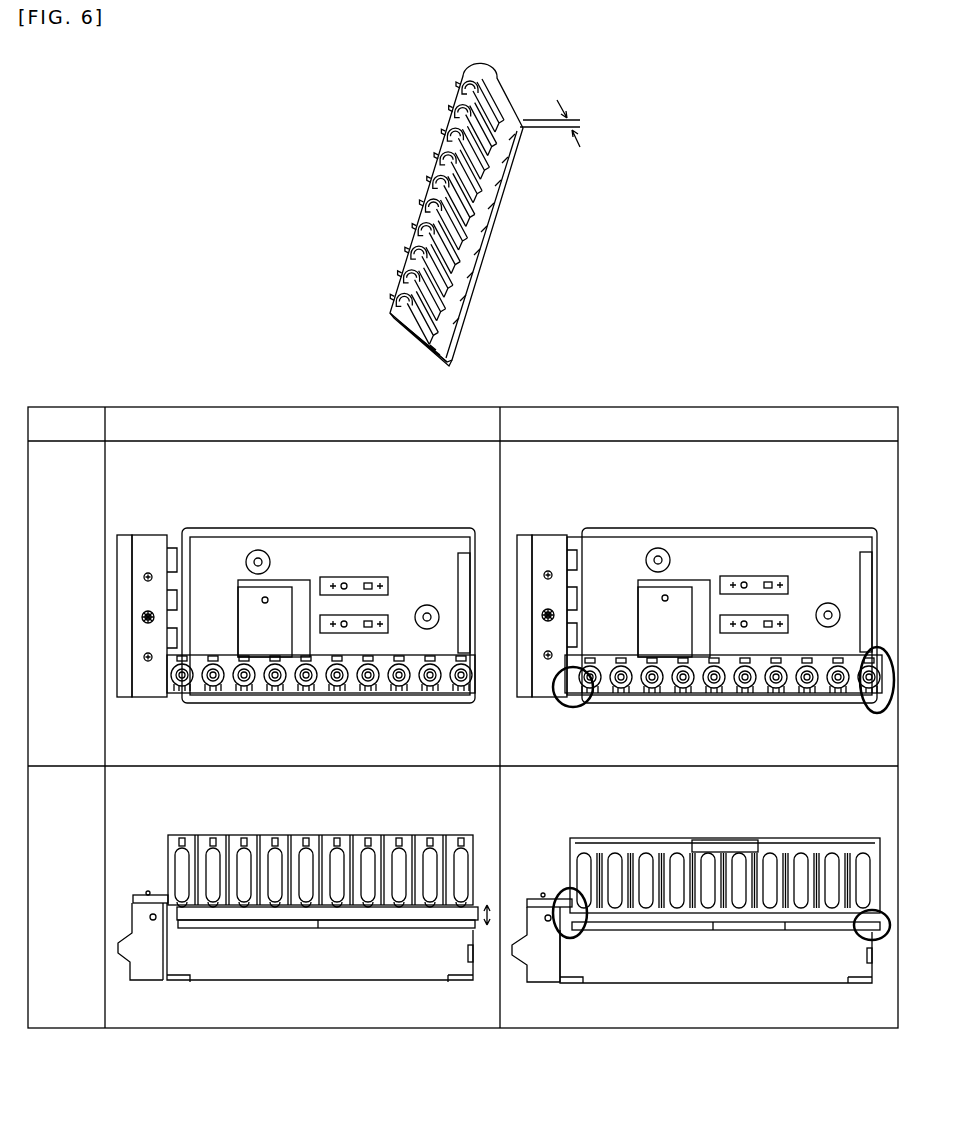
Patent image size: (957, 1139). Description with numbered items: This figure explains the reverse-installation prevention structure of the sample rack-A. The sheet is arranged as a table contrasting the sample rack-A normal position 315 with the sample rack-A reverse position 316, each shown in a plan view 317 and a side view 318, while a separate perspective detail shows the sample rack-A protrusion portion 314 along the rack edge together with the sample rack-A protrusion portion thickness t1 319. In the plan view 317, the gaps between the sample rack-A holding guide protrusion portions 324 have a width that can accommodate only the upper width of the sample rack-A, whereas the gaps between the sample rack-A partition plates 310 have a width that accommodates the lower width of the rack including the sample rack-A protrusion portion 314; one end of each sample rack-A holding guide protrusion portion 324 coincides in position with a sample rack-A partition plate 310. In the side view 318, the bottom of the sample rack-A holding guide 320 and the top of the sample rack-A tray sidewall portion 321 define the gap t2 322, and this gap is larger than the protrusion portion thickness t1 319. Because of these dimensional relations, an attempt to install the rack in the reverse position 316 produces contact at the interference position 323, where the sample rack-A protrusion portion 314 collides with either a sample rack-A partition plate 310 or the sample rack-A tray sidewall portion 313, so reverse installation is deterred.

The sample rack-A partition plate 310 is at (357, 655).
The sample rack-A tray sidewall portion 313 is at (165, 952).
The sample rack-A protrusion portion 314 is at (493, 230).
The sample rack-A normal position 315 is at (302, 424).
The sample rack-A reverse position 316 is at (699, 424).
The plan view 317 is at (66, 603).
The side view 318 is at (66, 897).
The sample rack-A protrusion portion thickness t1 319 is at (580, 147).
The bottom of sample rack-A holding guide 320 is at (168, 898).
The top of sample rack-A tray sidewall portion 321 is at (257, 925).
The gap t2 between bottom of sample rack-A holding guide and top of sample rack-A tr 322 is at (488, 908).
The interference position 323 is at (577, 710).
The sample rack-A holding guide protrusion portion 324 is at (173, 693).